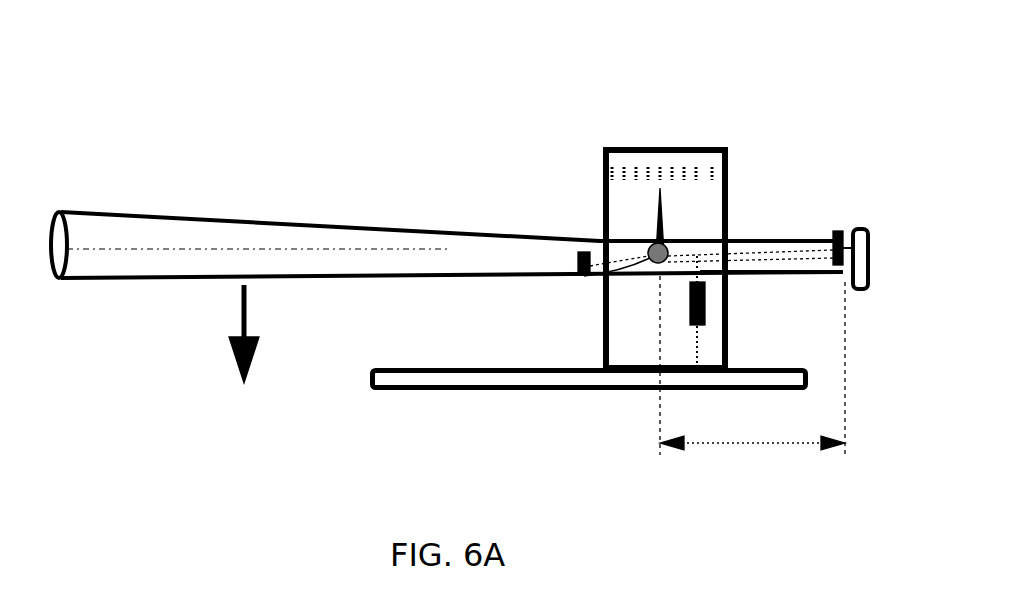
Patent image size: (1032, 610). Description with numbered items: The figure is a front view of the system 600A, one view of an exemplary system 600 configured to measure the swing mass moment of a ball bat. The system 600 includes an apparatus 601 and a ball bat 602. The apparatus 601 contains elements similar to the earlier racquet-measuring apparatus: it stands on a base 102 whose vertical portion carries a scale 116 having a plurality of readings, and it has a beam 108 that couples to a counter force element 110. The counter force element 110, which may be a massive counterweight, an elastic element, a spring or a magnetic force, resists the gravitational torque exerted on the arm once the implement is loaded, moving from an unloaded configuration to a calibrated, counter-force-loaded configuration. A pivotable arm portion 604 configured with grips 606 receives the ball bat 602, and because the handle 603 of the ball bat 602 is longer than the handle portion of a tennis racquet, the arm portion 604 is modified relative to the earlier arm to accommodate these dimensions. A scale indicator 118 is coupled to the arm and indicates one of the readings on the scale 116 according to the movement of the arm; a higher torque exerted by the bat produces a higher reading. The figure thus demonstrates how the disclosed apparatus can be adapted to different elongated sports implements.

The system 600 is at (255, 58).
The front view of the system 600A is at (480, 218).
The apparatus 601 is at (695, 58).
The ball bat 602 is at (452, 236).
The handle 603 is at (792, 280).
The pivotable arm portion 604 is at (805, 236).
The grips 606 is at (577, 250).
The scale 116 is at (663, 162).
The scale indicator 118 is at (642, 212).
The beam 108 is at (670, 242).
The counter force element 110 is at (727, 312).
The base 102 is at (562, 393).